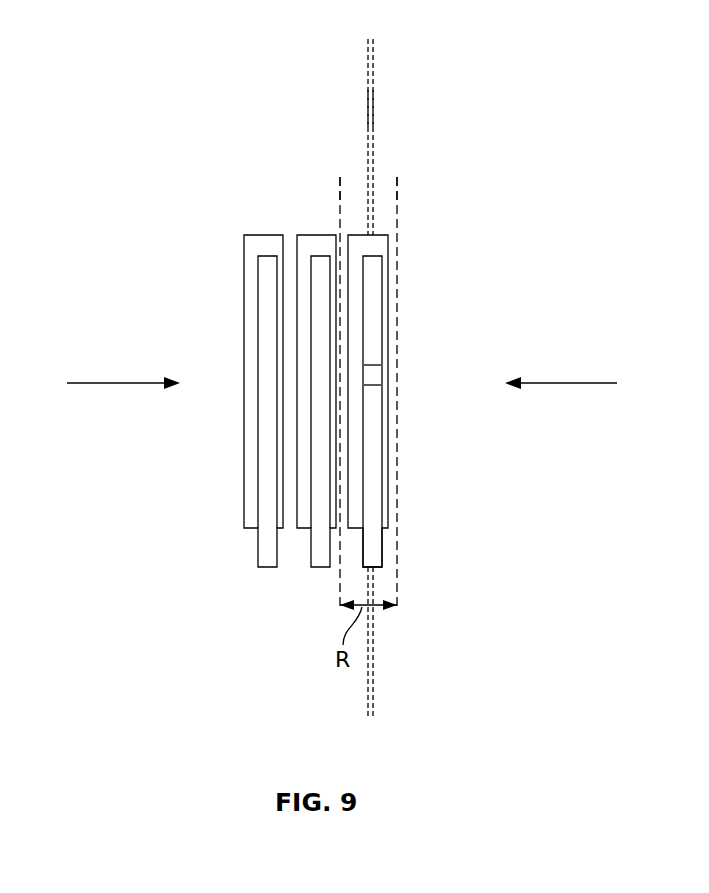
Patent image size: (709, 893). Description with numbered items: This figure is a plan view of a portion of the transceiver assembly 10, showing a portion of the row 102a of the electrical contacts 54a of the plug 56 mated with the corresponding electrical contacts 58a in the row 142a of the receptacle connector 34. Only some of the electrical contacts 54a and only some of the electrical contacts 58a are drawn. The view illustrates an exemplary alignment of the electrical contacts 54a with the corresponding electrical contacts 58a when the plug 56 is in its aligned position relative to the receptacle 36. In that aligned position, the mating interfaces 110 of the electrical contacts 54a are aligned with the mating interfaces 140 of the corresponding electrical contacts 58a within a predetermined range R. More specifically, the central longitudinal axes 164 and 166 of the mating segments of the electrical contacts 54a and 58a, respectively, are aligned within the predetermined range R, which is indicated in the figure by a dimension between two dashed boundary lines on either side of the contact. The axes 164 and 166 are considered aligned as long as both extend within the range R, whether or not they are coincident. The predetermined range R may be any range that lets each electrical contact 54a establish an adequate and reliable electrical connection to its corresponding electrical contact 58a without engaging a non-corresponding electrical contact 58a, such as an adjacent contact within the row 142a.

The transceiver assembly 10 is at (604, 138).
The receptacle connector 34 is at (238, 244).
The receptacle 36 is at (460, 285).
The electrical contacts 54a is at (367, 287).
The plug 56 is at (383, 553).
The electrical contacts 58a is at (355, 518).
The row 102a is at (120, 386).
The mating interfaces 110 is at (368, 385).
The mating interfaces 140 is at (366, 365).
The row 142a is at (563, 386).
The central longitudinal axis 164 is at (373, 92).
The central longitudinal axis 166 is at (368, 120).